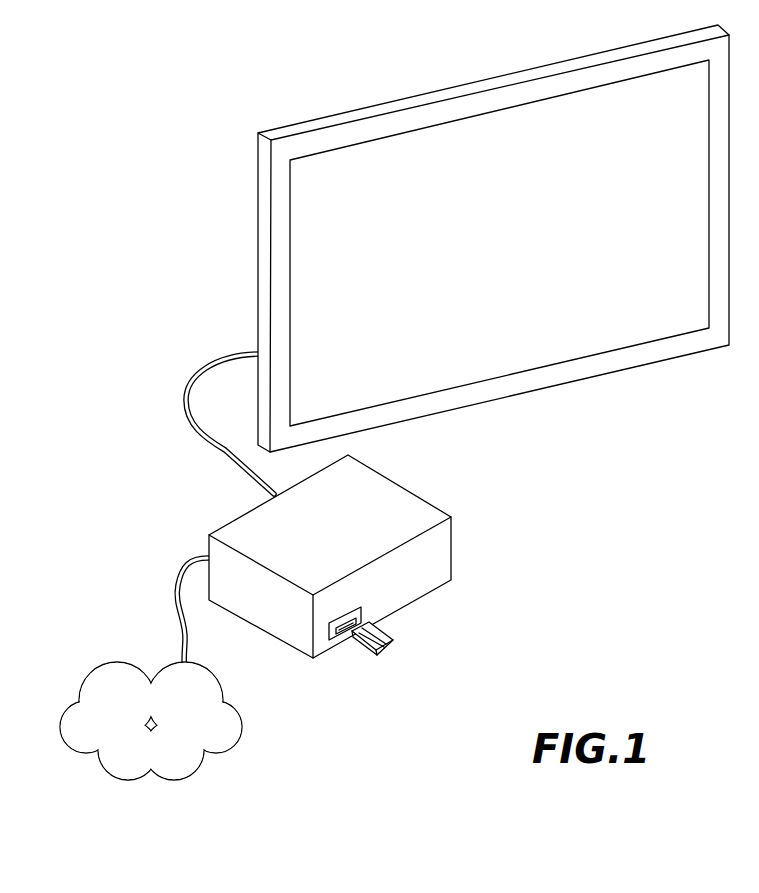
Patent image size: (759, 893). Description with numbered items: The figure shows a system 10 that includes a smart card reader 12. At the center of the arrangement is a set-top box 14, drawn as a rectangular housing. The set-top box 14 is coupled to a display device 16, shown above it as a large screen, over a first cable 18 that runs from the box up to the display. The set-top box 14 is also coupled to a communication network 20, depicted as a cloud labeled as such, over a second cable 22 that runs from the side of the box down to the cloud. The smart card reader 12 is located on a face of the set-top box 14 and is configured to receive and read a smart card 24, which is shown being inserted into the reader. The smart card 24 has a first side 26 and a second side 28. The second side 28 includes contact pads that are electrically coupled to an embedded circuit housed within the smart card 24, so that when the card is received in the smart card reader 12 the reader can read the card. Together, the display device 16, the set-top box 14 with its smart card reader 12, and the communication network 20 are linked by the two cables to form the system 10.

The system 10 is at (392, 402).
The smart card reader 12 is at (340, 634).
The set-top box 14 is at (443, 550).
The display device 16 is at (642, 353).
The first cable 18 is at (192, 437).
The communication network 20 is at (243, 720).
The second cable 22 is at (175, 595).
The smart card 24 is at (390, 643).
The first side 26 is at (383, 640).
The second side 28 is at (377, 658).